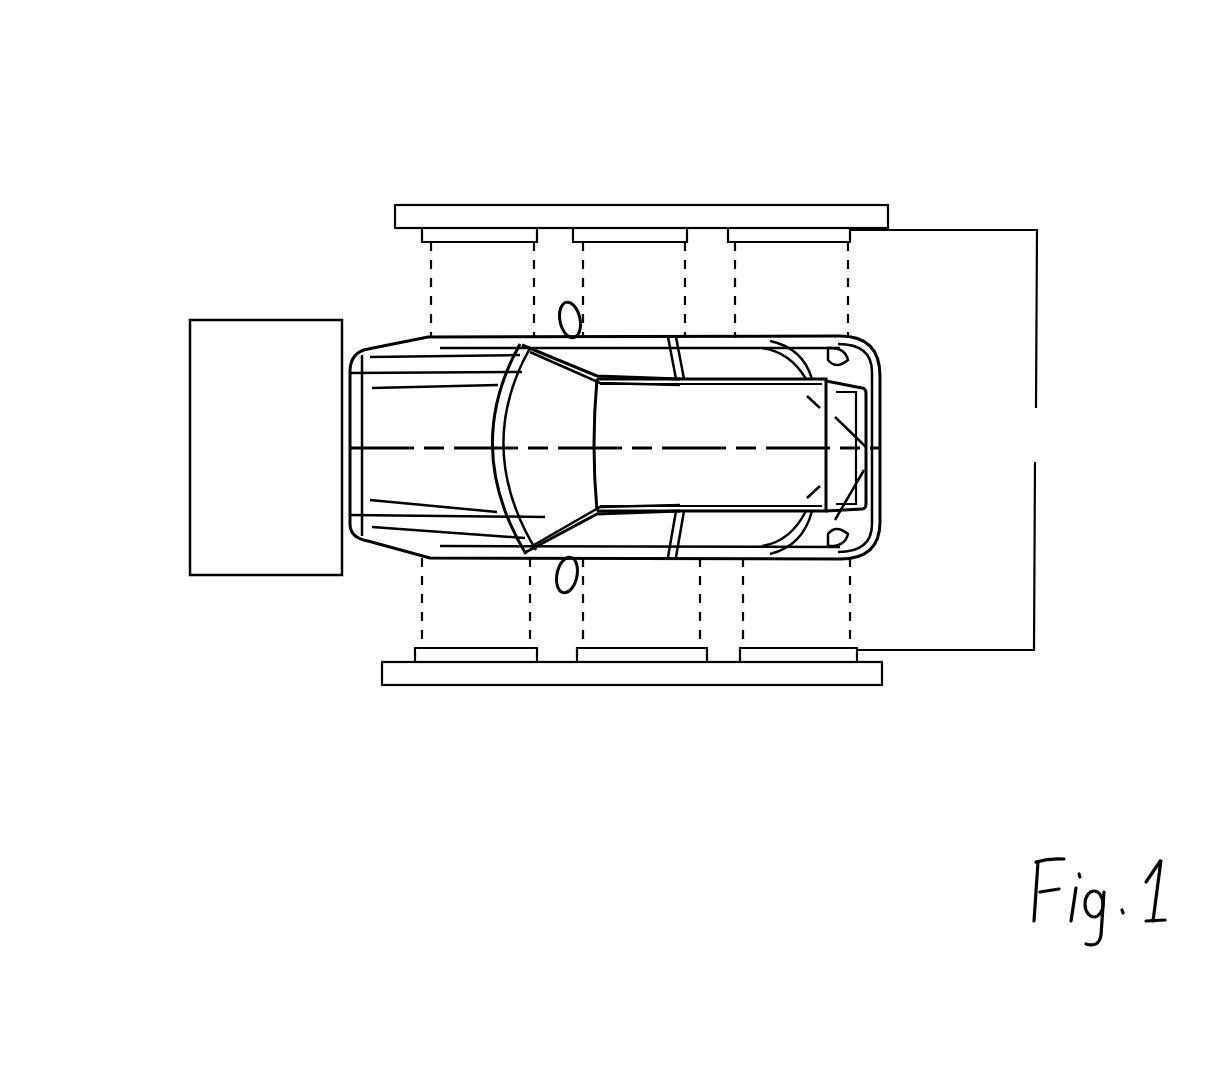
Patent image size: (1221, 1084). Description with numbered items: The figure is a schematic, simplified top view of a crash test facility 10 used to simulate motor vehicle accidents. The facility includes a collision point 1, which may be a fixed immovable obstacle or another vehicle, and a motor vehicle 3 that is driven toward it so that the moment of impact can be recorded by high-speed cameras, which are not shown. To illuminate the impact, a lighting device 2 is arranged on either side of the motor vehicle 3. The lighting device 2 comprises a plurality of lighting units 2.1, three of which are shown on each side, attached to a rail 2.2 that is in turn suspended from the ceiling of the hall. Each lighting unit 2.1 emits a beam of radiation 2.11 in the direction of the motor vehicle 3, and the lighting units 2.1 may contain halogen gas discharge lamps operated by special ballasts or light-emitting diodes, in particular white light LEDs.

The crash test facility 10 is at (165, 97).
The collision point 1 is at (288, 451).
The lighting device 2 is at (710, 442).
The lighting units 2.1 is at (793, 227).
The rail 2.2 is at (410, 224).
The beam of radiation 2.11 is at (798, 275).
The motor vehicle 3 is at (656, 435).